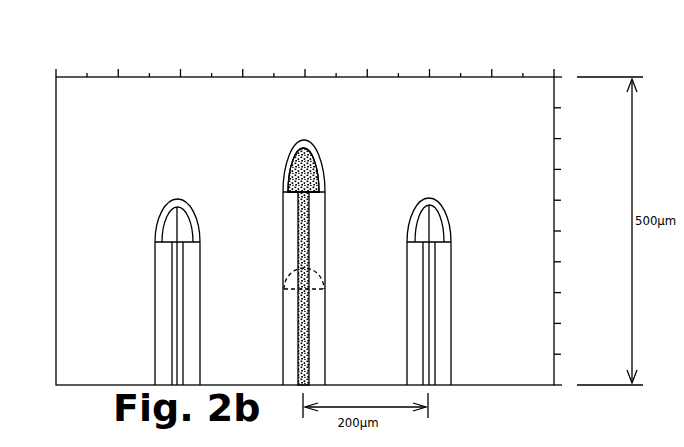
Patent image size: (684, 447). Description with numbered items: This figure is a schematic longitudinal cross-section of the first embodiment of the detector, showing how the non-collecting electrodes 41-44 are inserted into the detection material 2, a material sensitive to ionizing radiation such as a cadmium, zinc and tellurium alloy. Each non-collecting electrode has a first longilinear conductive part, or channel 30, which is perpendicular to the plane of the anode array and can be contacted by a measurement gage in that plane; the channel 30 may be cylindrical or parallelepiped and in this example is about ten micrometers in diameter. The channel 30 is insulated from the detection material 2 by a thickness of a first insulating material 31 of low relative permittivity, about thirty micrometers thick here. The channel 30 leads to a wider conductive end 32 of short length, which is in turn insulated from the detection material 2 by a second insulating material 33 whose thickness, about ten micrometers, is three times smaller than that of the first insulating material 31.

The detection material 2 is at (497, 122).
The channel 30 is at (298, 342).
The first insulating material 31 is at (320, 327).
The wider end 32 is at (311, 157).
The second insulating material 33 is at (320, 172).
The non-collecting electrodes 41-44 is at (452, 333).